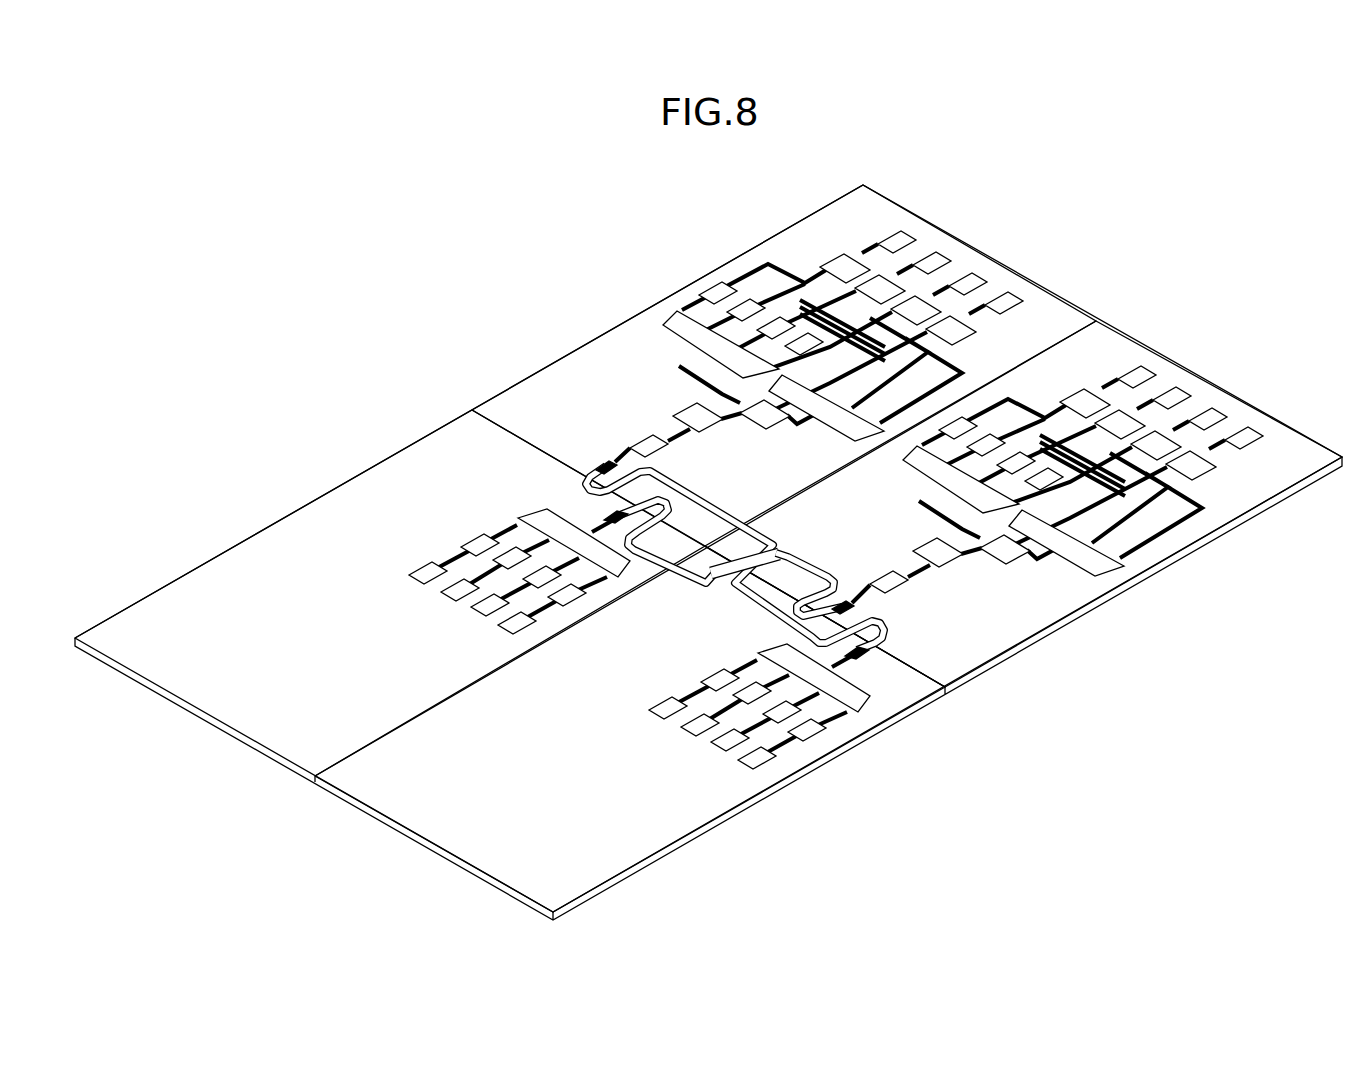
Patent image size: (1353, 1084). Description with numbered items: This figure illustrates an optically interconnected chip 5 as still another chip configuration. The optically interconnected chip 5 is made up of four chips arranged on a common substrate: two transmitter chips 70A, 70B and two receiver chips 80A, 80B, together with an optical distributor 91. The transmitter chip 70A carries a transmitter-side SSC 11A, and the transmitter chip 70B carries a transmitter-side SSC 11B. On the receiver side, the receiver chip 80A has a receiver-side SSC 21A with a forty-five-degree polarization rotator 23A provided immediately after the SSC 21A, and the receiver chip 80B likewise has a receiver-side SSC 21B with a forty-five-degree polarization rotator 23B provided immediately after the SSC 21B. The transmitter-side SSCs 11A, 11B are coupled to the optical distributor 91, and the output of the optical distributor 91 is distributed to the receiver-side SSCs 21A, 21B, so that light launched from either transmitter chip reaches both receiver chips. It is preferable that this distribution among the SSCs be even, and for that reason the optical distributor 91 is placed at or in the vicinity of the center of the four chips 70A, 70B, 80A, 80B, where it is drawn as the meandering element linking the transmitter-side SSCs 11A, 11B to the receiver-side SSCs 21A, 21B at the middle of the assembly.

The optically interconnected chip 5 is at (467, 202).
The transmitter chip 70A is at (338, 487).
The transmitter chip 70B is at (700, 815).
The receiver chip 80A is at (640, 318).
The receiver chip 80B is at (1020, 637).
The transmitter-side SSC 11A is at (613, 513).
The transmitter-side SSC 11B is at (872, 635).
The receiver-side SSC 21A is at (604, 461).
The receiver-side SSC 21B is at (800, 555).
The 45-degree polarization rotator 23A is at (647, 432).
The 45-degree polarization rotator 23B is at (883, 577).
The optical distributor 91 is at (724, 588).